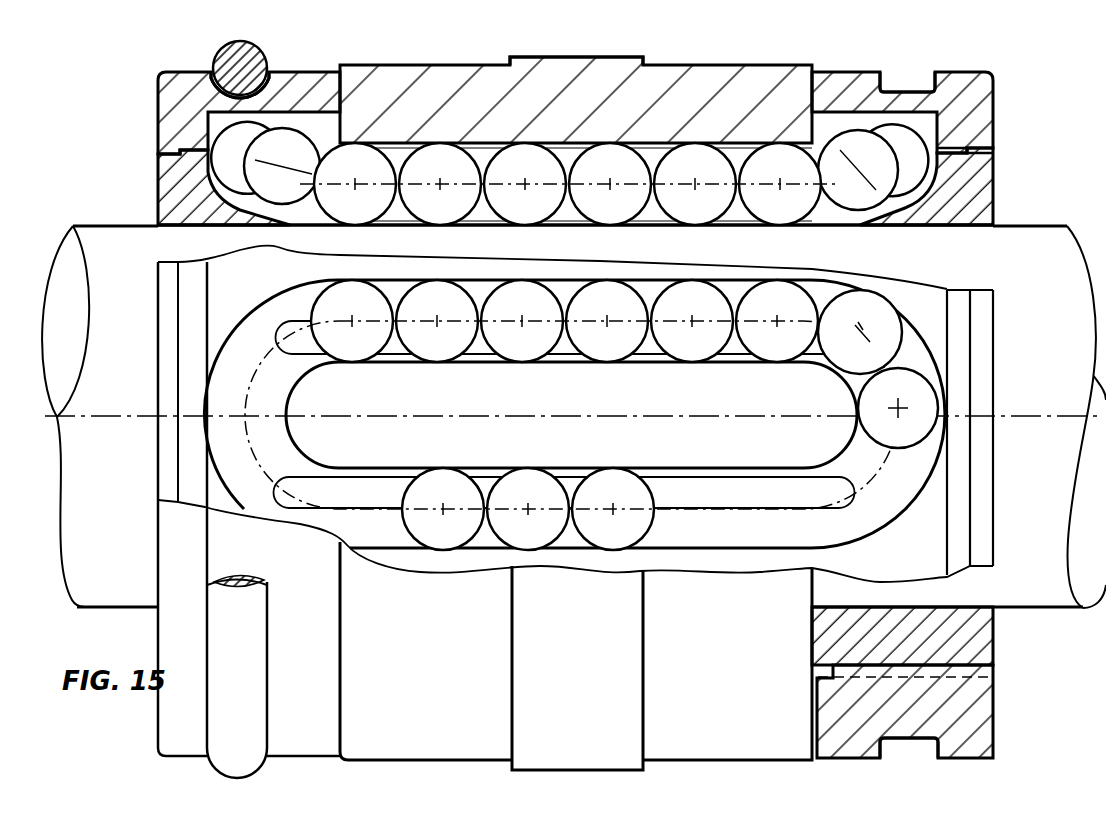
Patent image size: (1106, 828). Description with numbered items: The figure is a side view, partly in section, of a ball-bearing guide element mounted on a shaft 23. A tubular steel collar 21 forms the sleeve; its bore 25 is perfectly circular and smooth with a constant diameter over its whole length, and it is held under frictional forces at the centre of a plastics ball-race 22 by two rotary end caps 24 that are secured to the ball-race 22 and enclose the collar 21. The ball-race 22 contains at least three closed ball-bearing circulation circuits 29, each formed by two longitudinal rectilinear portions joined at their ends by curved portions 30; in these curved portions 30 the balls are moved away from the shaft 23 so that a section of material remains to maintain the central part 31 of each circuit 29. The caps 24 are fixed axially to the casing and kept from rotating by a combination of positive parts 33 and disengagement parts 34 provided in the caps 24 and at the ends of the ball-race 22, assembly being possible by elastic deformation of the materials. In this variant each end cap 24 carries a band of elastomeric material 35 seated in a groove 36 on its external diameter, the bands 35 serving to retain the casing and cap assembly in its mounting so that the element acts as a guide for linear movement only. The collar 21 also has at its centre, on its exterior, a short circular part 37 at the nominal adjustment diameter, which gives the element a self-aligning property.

The steel collar 21 is at (702, 82).
The ball-race 22 is at (160, 190).
The shaft 23 is at (1064, 228).
The end cap 24 is at (158, 89).
The bore 25 is at (523, 143).
The ball-bearing circulation circuit 29 is at (650, 471).
The curved portion 30 is at (912, 340).
The central part 31 is at (571, 415).
The positive part 33 is at (160, 154).
The disengagement part 34 is at (582, 405).
The band of elastomeric material 35 is at (258, 62).
The groove 36 is at (199, 76).
The short circular part 37 is at (517, 58).